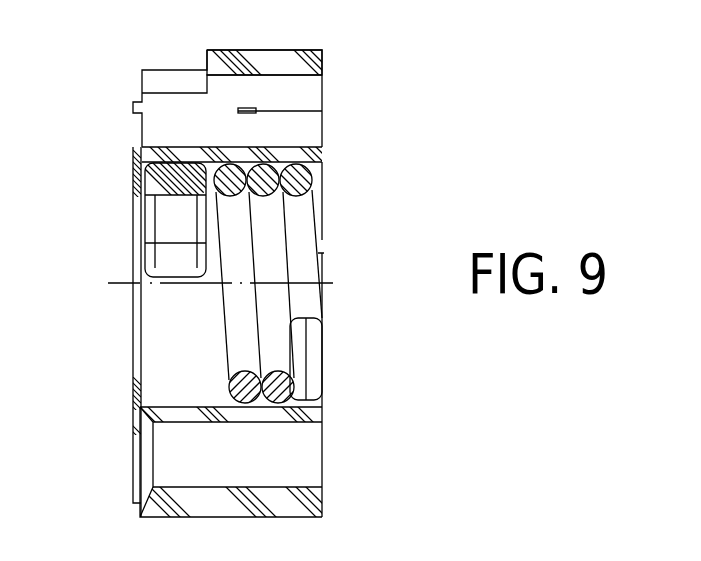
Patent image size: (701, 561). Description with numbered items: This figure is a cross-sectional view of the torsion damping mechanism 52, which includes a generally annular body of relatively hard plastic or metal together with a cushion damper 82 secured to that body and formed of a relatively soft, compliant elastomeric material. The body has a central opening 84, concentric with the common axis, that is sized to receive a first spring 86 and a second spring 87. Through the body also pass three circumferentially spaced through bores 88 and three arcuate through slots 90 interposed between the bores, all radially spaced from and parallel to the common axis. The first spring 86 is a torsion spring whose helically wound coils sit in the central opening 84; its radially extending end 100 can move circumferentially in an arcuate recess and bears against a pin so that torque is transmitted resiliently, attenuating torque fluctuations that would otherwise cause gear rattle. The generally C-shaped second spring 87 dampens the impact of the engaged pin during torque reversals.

The torsion damping mechanism 52 is at (411, 134).
The cushion damper 82 is at (130, 148).
The central opening 84 is at (183, 403).
The first spring 86 is at (311, 150).
The second spring 87 is at (172, 222).
The through bores 88 is at (263, 485).
The through slots 90 is at (300, 78).
The end of first spring 100 is at (313, 377).